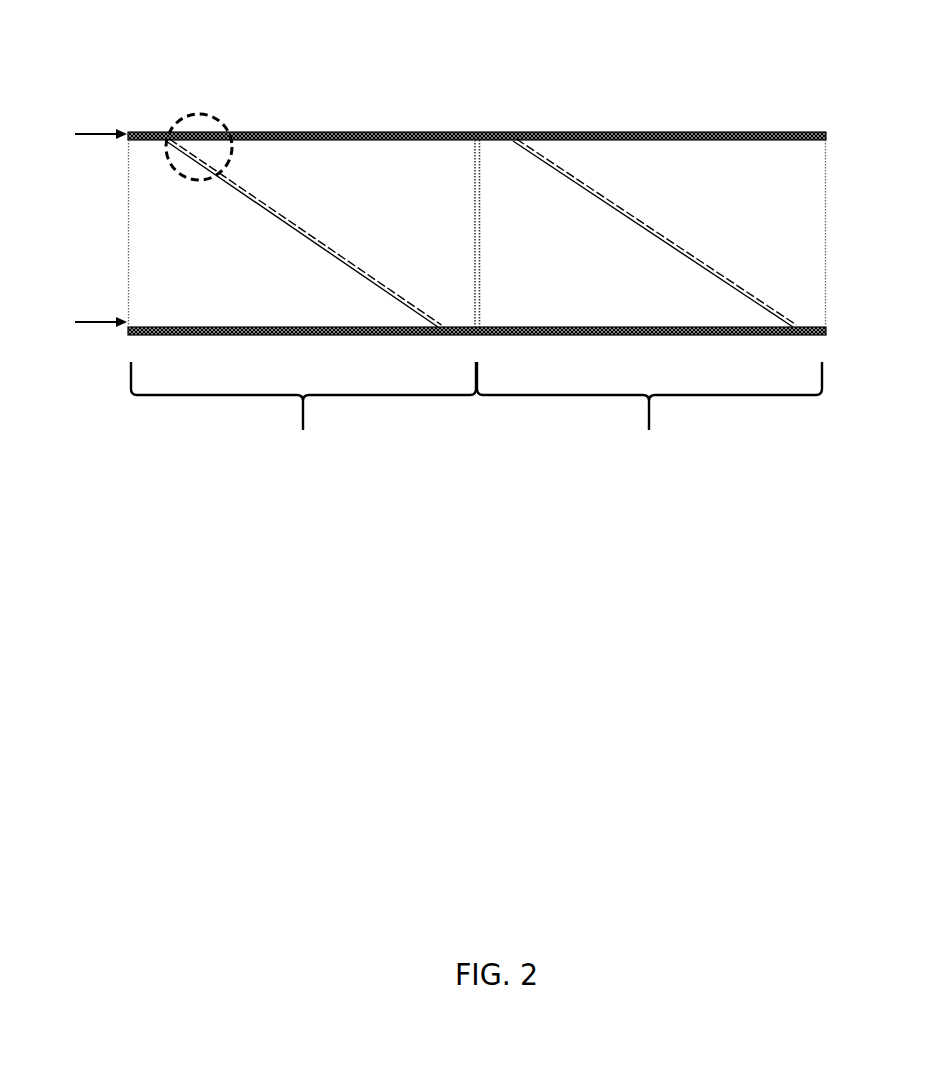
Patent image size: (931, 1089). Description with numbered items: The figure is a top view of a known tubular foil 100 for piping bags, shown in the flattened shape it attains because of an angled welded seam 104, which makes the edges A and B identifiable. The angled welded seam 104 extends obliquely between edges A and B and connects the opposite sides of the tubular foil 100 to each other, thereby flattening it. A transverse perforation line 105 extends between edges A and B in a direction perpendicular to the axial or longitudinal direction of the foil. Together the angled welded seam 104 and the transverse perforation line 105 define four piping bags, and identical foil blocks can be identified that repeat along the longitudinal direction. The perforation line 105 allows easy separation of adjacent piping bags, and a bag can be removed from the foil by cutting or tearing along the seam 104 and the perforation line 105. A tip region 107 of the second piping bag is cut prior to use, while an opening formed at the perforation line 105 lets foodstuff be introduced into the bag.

The tubular foil 100 is at (202, 50).
The angled welded seam 104 is at (283, 217).
The transverse perforation line 105 is at (478, 254).
The tip region 107 is at (217, 120).